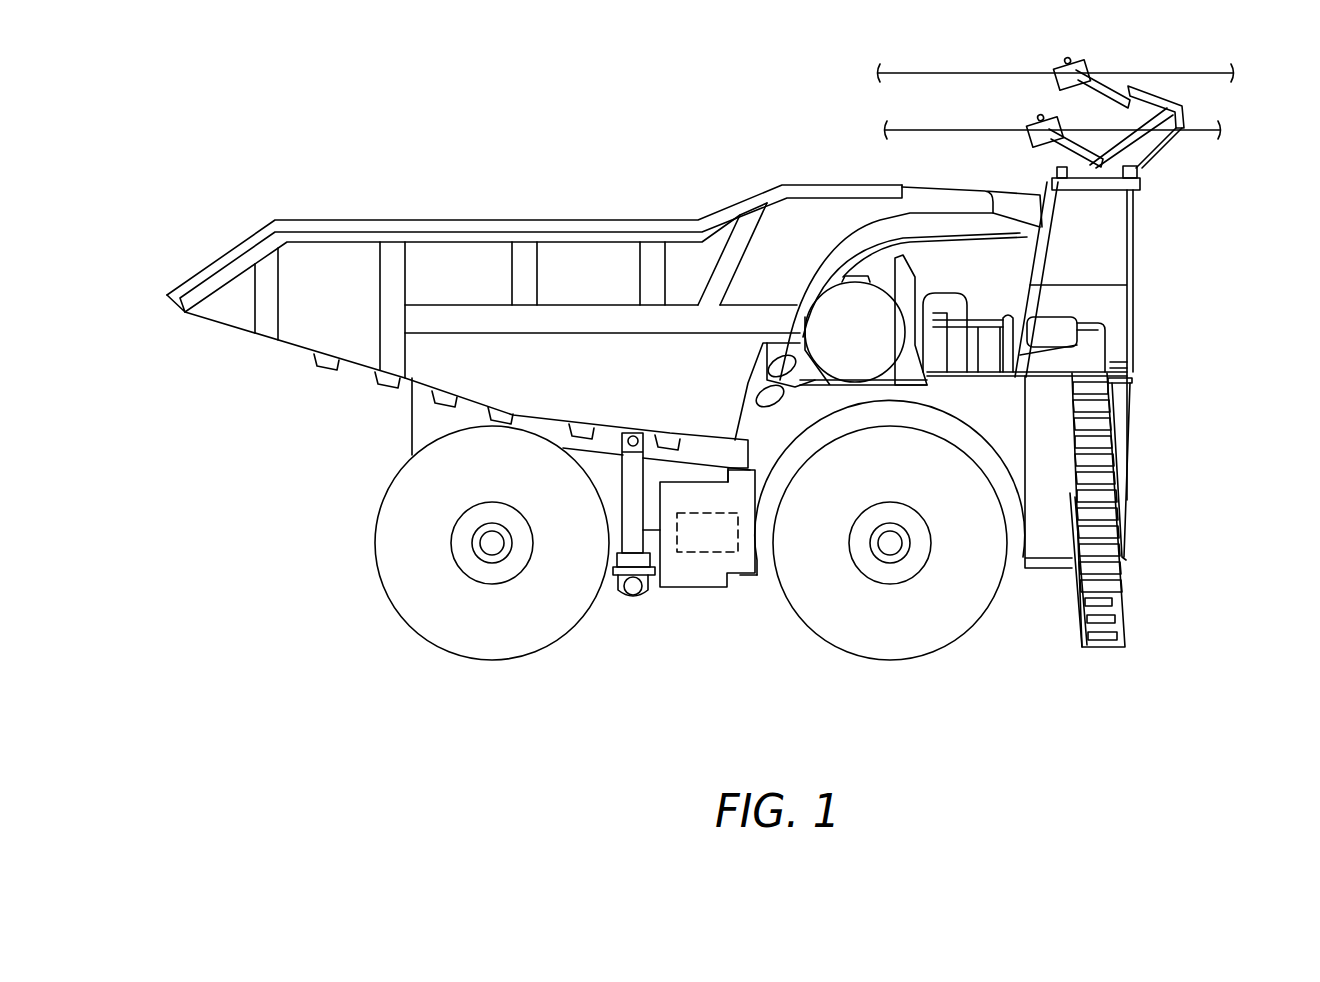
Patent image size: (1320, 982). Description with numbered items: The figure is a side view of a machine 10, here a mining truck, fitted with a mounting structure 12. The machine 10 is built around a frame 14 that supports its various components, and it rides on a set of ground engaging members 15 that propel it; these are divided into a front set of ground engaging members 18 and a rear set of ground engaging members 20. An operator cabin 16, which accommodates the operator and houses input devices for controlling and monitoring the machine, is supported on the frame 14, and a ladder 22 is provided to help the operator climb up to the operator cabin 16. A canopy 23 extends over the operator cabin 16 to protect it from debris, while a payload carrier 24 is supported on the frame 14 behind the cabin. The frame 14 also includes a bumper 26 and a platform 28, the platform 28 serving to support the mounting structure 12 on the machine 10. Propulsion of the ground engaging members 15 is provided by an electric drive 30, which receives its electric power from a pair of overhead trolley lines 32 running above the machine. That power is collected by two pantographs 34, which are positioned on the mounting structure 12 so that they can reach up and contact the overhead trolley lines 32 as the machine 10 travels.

The machine 10 is at (360, 122).
The mounting structure 12 is at (1153, 560).
The frame 14 is at (1038, 575).
The ground engaging members 15 is at (390, 660).
The operator cabin 16 is at (967, 298).
The front set of ground engaging members 18 is at (897, 662).
The rear set of ground engaging members 20 is at (492, 662).
The ladder 22 is at (1125, 632).
The canopy 23 is at (975, 192).
The payload carrier 24 is at (521, 220).
The bumper 26 is at (1123, 557).
The platform 28 is at (1112, 355).
The electric drive 30 is at (720, 544).
The overhead trolley lines 32 is at (896, 128).
The pantographs 34 is at (1060, 58).